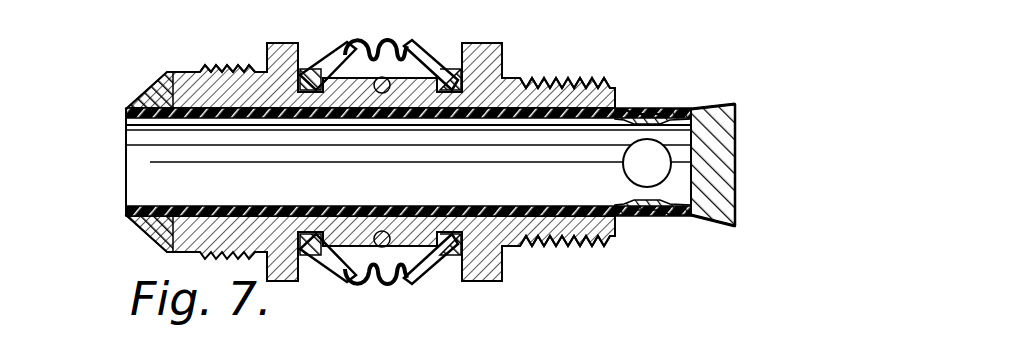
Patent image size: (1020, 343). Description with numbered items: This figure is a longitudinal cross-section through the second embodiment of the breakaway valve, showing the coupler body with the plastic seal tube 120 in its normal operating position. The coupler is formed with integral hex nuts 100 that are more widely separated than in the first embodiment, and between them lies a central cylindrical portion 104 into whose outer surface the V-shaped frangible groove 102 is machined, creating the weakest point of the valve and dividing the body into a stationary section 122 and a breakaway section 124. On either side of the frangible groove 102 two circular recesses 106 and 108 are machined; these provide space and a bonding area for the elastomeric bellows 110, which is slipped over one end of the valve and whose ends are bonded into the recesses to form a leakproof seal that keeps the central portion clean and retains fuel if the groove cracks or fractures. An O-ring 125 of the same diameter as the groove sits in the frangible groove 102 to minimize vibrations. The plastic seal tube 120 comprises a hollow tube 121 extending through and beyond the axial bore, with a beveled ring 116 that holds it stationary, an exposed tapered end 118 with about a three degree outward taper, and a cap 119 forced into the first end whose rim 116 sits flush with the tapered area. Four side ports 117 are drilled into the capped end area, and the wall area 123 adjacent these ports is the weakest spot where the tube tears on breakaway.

The integral hex nuts 100 is at (288, 44).
The V-shaped frangible groove 102 is at (346, 44).
The central cylindrical portion 104 is at (390, 42).
The circular recess 106 is at (304, 265).
The circular recess 108 is at (517, 78).
The elastomeric bellows 110 is at (433, 48).
The beveled ring 116 is at (732, 105).
The side ports 117 is at (650, 188).
The tapered end 118 is at (700, 106).
The cap 119 is at (736, 152).
The plastic seal tube 120 is at (164, 170).
The hollow tube 121 is at (575, 248).
The stationary section 122 is at (587, 75).
The wall area 123 is at (641, 115).
The breakaway section 124 is at (198, 69).
The O-ring 125 is at (412, 265).